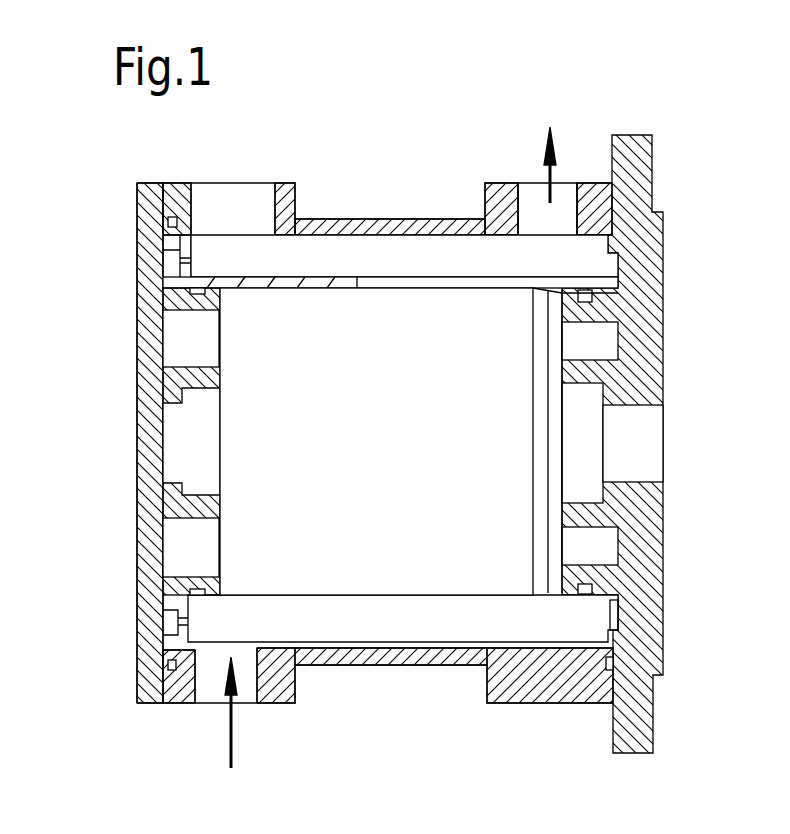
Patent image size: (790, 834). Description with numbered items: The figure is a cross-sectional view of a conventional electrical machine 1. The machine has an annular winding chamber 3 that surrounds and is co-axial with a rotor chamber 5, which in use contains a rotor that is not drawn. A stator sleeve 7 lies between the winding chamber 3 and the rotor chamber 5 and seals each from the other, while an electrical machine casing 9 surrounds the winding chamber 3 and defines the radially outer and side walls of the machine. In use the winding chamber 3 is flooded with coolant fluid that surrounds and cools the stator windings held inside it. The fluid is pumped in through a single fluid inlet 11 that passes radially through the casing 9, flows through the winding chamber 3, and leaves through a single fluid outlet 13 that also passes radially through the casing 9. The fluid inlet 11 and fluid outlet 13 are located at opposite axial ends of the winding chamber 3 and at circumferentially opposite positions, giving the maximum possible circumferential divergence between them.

The electrical machine 1 is at (106, 285).
The annular winding chamber 3 is at (368, 618).
The rotor chamber 5 is at (257, 467).
The stator sleeve 7 is at (442, 595).
The electrical machine casing 9 is at (640, 250).
The fluid inlet 11 is at (222, 677).
The fluid outlet 13 is at (557, 192).